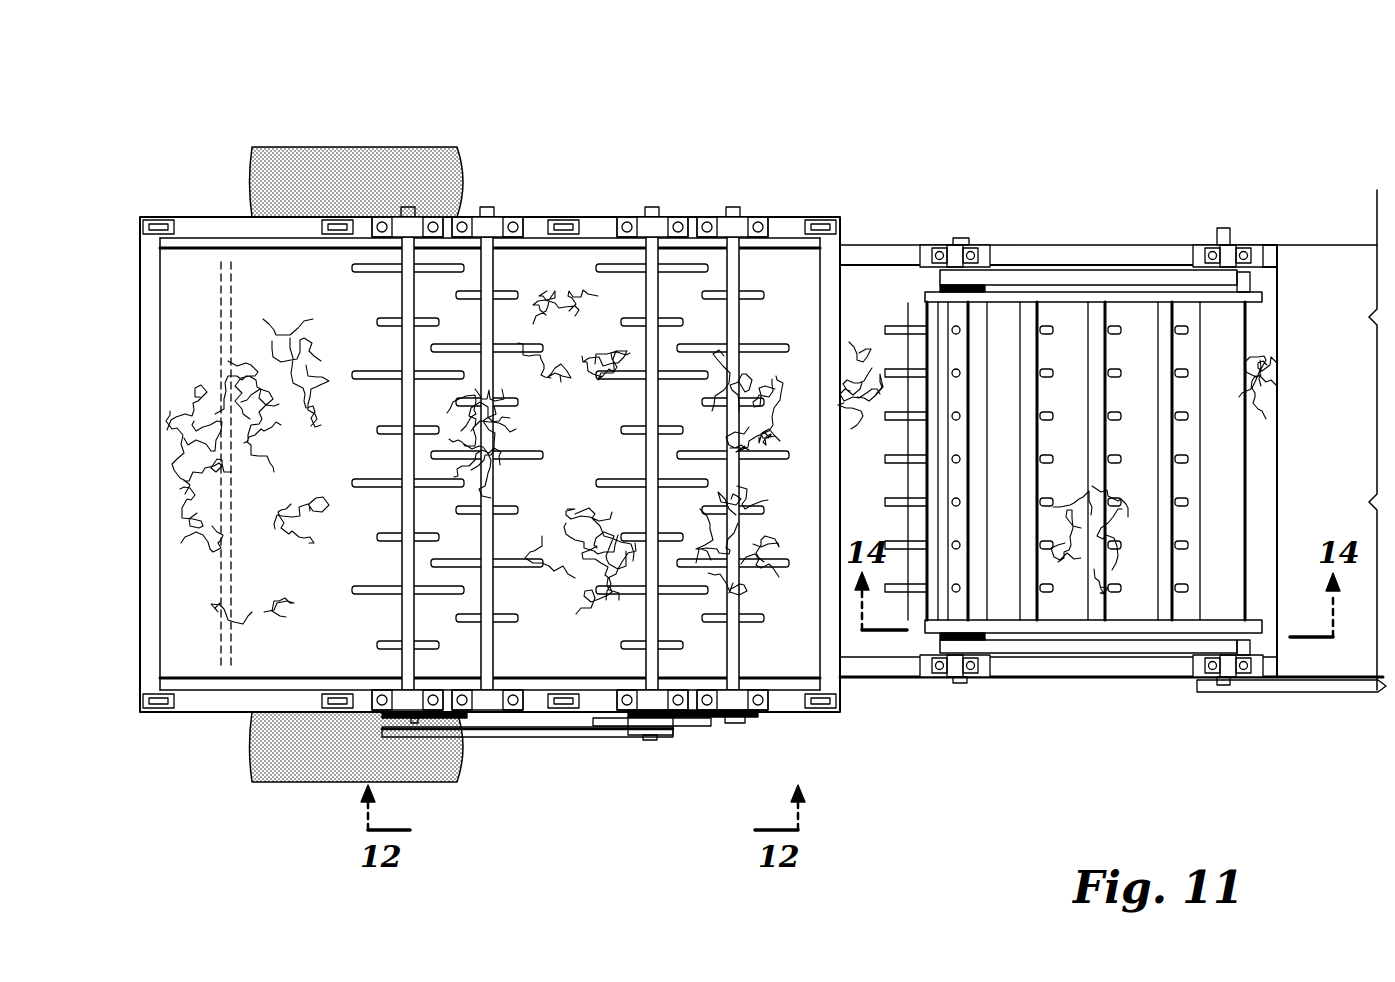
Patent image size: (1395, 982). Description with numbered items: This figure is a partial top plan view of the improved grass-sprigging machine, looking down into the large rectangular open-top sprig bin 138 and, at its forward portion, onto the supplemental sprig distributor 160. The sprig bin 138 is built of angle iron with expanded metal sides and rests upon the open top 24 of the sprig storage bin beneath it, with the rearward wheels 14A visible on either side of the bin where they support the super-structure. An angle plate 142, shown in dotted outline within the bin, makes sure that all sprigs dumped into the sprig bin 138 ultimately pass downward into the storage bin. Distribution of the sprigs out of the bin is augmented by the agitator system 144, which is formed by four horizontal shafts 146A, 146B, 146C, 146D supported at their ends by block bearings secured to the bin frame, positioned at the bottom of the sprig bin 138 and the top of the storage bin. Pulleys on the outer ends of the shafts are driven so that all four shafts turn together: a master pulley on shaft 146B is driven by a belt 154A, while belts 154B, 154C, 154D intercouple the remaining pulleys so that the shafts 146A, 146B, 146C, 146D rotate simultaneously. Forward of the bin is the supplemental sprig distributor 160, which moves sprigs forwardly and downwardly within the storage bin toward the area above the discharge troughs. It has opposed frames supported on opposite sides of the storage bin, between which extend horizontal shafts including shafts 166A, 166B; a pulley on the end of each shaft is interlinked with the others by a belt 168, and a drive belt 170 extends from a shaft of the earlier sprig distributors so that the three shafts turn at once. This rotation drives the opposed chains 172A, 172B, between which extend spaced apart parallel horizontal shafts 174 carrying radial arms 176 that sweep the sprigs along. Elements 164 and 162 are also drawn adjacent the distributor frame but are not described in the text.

The rearward wheel 14A is at (268, 163).
The angle plate 142 is at (193, 285).
The agitator system 144 is at (750, 276).
The sprig bin 138 is at (823, 182).
The open top 24 is at (880, 250).
The horizontal shaft 166B is at (963, 243).
The chain 172B is at (1073, 295).
The top bar 164 is at (1128, 292).
The supplemental sprig distributor 160 is at (1098, 376).
The horizontal shaft 166A is at (1225, 237).
The horizontal shaft 174 is at (1098, 400).
The radial arm 176 is at (898, 327).
The horizontal shaft 146A is at (731, 656).
The horizontal shaft 146B is at (650, 398).
The horizontal shaft 146C is at (487, 634).
The horizontal shaft 146D is at (404, 610).
The belt 154A is at (690, 728).
The belt 154B is at (745, 722).
The belt 154C is at (567, 737).
The belt 154D is at (440, 735).
The bottom bar 162 is at (1123, 632).
The belt 168 is at (1165, 650).
The chain 172A is at (1062, 628).
The drive belt 170 is at (1308, 695).